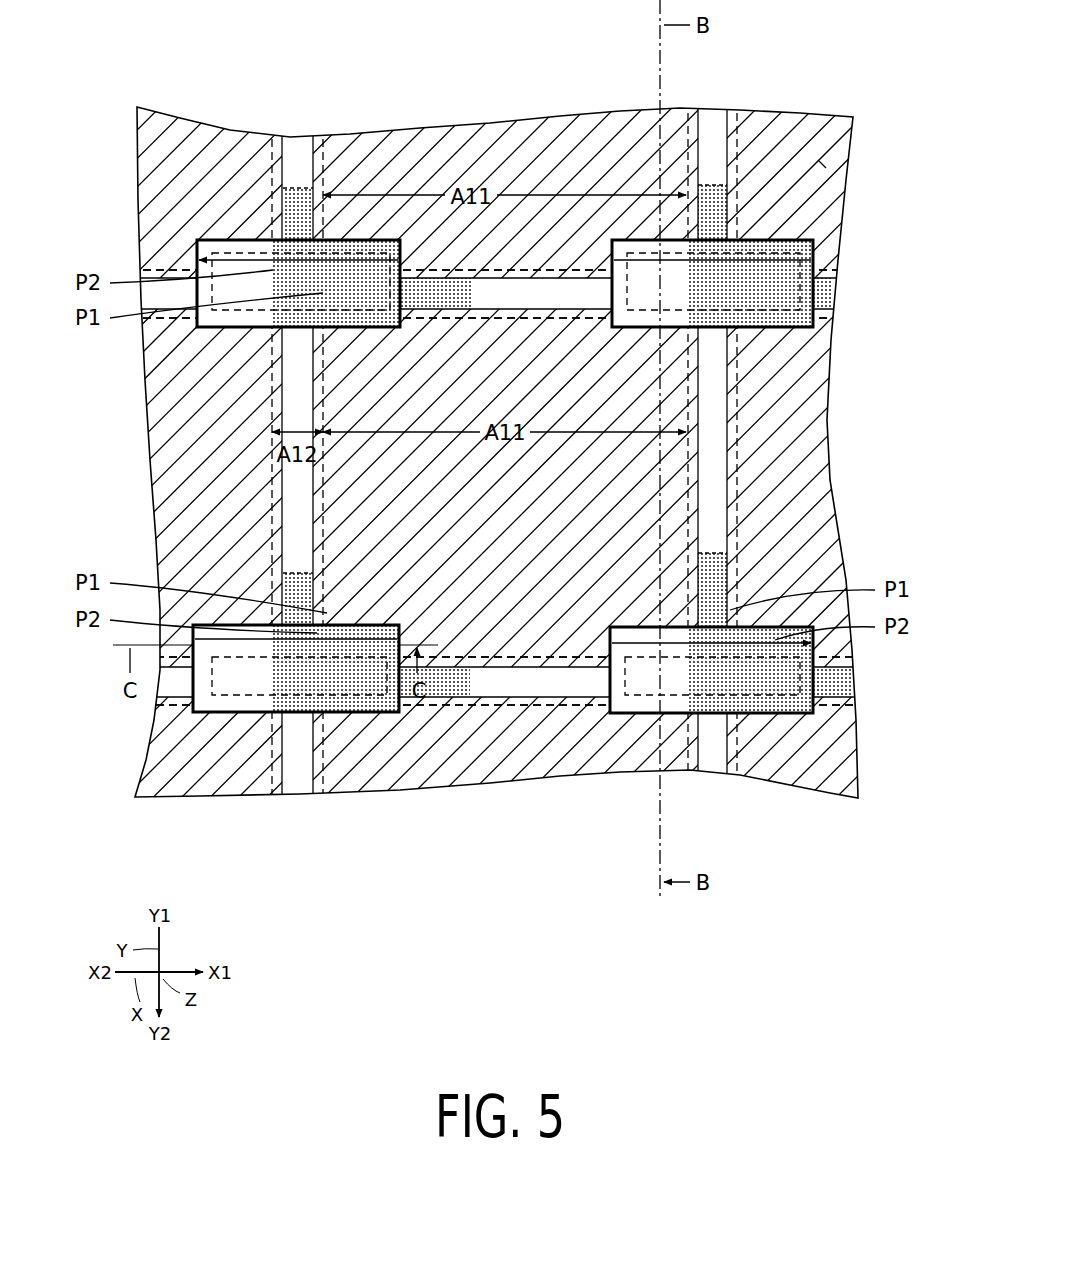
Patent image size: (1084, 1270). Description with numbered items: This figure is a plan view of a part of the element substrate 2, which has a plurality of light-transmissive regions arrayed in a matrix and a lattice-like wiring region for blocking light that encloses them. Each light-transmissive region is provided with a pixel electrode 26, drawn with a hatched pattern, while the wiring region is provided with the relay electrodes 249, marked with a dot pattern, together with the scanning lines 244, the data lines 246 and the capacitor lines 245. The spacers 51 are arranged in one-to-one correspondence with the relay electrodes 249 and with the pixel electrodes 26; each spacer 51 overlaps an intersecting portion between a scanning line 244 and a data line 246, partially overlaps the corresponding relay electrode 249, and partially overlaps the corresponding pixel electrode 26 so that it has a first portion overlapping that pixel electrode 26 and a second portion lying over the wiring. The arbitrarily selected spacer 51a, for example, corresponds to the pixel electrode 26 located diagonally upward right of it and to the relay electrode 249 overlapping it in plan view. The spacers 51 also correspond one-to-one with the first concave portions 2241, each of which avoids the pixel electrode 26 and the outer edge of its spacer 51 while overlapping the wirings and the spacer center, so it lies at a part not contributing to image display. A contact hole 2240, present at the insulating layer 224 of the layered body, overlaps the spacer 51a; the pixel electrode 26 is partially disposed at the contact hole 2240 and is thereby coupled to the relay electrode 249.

The element substrate 2 is at (862, 115).
The insulating layer 224 is at (822, 166).
The contact hole 2240 is at (378, 240).
The first concave portion 2241 is at (248, 240).
The scanning line 244 is at (537, 278).
The capacitor line 245 is at (500, 487).
The data line 246 is at (272, 393).
The relay electrode 249 is at (298, 188).
The pixel electrode 26 is at (808, 212).
The spacer 51 is at (318, 262).
The spacer 51a is at (300, 713).